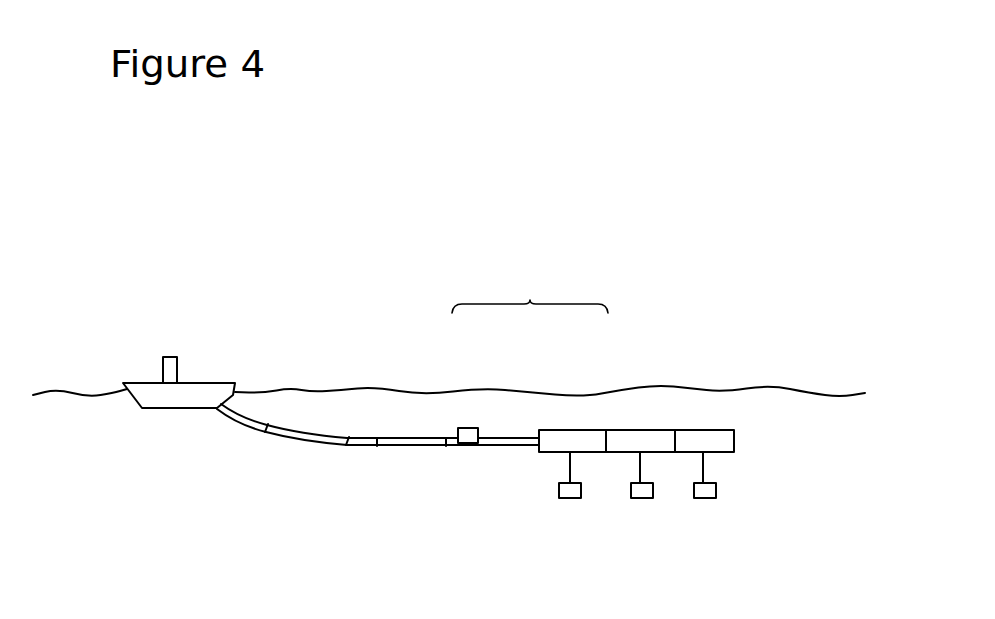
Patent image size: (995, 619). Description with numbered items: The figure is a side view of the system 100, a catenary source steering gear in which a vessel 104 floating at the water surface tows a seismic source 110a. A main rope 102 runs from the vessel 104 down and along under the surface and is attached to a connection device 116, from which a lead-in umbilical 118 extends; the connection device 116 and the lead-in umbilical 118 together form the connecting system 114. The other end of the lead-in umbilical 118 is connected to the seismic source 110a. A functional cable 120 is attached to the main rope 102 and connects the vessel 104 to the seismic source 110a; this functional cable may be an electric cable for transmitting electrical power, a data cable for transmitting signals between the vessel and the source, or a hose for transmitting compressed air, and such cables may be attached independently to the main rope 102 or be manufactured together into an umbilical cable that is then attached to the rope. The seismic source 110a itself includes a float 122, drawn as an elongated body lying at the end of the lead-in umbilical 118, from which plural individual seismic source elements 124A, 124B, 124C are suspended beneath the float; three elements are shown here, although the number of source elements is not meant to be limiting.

The system 100 is at (576, 180).
The main rope 102 is at (377, 447).
The vessel 104 is at (193, 382).
The seismic source 110a is at (539, 464).
The connecting system 114 is at (530, 361).
The connection device 116 is at (468, 428).
The lead-in umbilical 118 is at (510, 437).
The functional cable 120 is at (424, 447).
The float 122 is at (653, 440).
The individual seismic source element 124A is at (581, 492).
The individual seismic source element 124B is at (653, 492).
The individual seismic source element 124C is at (716, 488).